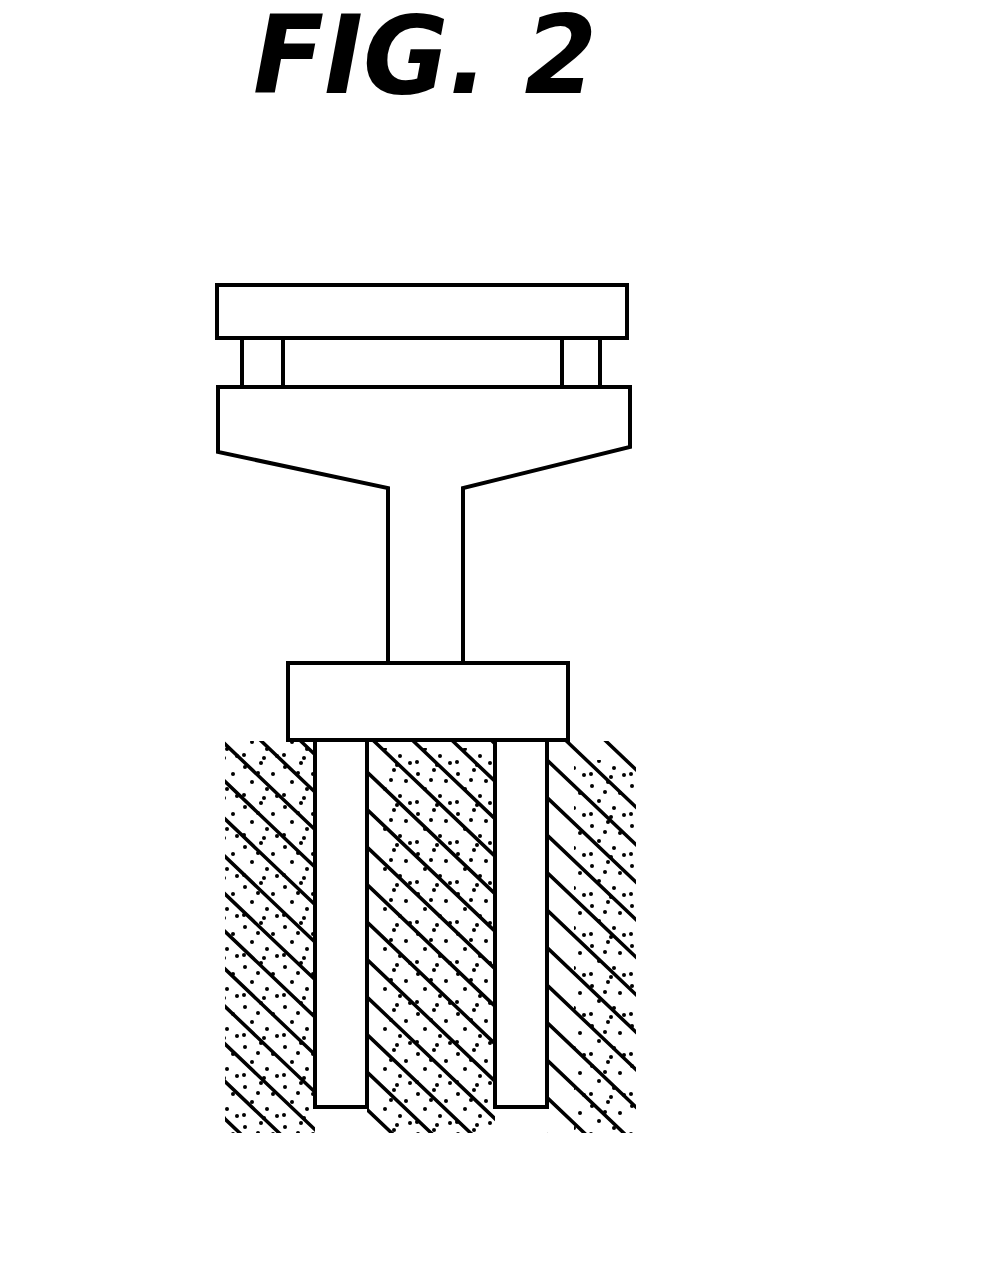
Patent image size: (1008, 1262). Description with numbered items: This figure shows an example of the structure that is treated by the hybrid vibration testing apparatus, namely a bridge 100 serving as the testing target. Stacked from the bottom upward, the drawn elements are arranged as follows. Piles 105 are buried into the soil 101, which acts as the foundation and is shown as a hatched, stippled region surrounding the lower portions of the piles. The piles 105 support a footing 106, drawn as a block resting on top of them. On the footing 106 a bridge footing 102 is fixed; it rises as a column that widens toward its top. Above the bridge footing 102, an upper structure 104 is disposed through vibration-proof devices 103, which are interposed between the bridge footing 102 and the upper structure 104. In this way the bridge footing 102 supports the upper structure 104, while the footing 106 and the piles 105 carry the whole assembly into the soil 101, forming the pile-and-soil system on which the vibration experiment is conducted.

The bridge 100 is at (680, 772).
The soil 101 is at (617, 950).
The bridge footing 102 is at (450, 580).
The vibration-proof devices 103 is at (605, 358).
The upper structure 104 is at (622, 307).
The piles 105 is at (333, 915).
The footing 106 is at (557, 702).